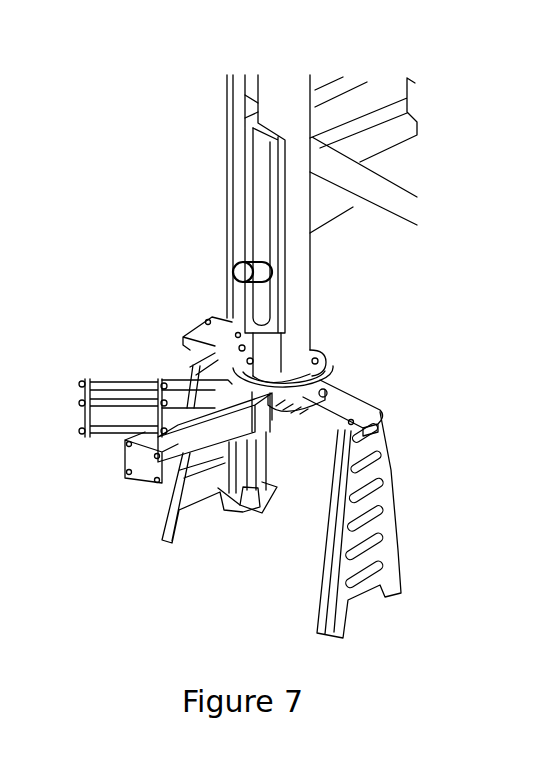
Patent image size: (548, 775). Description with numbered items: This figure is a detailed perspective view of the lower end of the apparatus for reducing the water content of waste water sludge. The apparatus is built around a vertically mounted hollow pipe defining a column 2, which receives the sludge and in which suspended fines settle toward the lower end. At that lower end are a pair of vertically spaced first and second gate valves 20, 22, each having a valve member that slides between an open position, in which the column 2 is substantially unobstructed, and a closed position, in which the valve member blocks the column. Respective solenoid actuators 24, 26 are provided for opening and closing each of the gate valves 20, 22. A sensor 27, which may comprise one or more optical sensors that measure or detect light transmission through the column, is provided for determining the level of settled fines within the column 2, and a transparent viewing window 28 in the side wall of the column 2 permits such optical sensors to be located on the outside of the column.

The column 2 is at (308, 332).
The first gate valve 20 is at (175, 393).
The second gate valve 22 is at (258, 425).
The solenoid actuator 24 is at (81, 410).
The solenoid actuator 26 is at (146, 470).
The sensor 27 is at (240, 270).
The transparent viewing window 28 is at (263, 212).